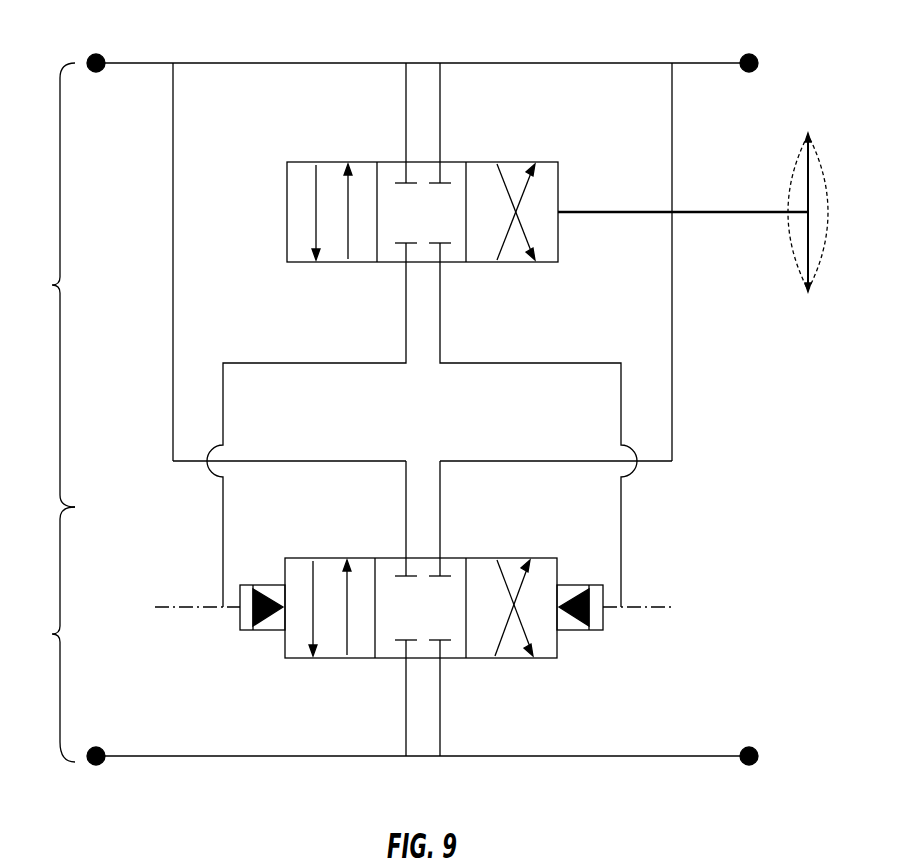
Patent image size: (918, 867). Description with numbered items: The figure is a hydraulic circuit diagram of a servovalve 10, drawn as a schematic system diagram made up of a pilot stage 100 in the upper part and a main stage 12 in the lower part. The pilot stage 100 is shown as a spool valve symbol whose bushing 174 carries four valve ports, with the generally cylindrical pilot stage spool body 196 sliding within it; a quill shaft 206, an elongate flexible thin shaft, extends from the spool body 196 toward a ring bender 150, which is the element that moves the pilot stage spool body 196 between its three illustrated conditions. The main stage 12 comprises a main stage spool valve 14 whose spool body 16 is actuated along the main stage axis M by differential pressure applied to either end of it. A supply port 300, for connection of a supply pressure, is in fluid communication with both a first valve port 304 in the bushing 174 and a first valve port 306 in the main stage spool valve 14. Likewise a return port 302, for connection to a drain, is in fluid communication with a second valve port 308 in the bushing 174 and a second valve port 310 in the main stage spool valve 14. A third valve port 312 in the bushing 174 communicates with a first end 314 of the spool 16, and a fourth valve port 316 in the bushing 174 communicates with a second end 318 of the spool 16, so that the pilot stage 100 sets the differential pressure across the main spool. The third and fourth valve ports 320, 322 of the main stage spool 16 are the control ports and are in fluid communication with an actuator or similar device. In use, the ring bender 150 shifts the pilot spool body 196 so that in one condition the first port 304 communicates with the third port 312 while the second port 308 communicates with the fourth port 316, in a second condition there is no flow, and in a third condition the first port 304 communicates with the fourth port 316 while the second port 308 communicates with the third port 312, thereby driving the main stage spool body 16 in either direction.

The servovalve 10 is at (800, 398).
The main stage 12 is at (52, 634).
The main stage spool valve 14 is at (546, 676).
The spool body 16 is at (478, 572).
The pilot stage 100 is at (46, 285).
The ring bender 150 is at (810, 193).
The bushing 174 is at (392, 160).
The spool body 196 is at (299, 193).
The quill shaft 206 is at (736, 210).
The supply port 300 is at (98, 71).
The return port 302 is at (757, 60).
The first valve port 304 is at (406, 125).
The first valve port 306 is at (406, 528).
The second valve port 308 is at (440, 125).
The second valve port 310 is at (440, 519).
The third valve port 312 is at (406, 332).
The first end 314 is at (240, 595).
The fourth valve port 316 is at (440, 332).
The second end 318 is at (603, 595).
The third valve port 320 is at (406, 728).
The fourth valve port 322 is at (440, 718).